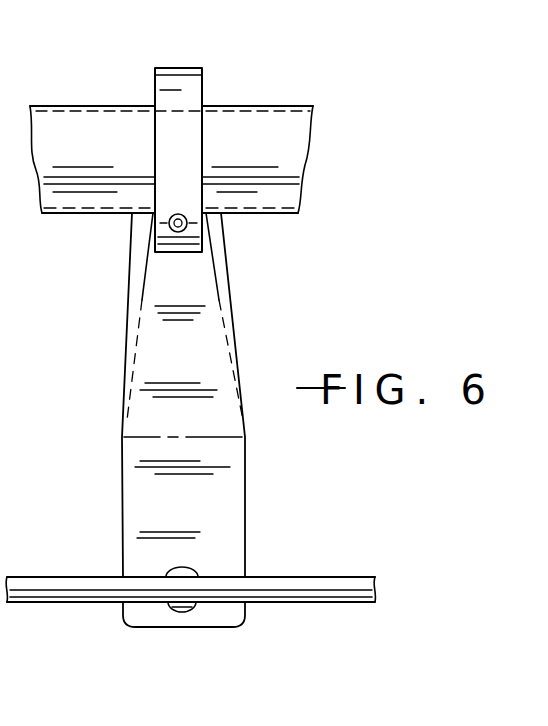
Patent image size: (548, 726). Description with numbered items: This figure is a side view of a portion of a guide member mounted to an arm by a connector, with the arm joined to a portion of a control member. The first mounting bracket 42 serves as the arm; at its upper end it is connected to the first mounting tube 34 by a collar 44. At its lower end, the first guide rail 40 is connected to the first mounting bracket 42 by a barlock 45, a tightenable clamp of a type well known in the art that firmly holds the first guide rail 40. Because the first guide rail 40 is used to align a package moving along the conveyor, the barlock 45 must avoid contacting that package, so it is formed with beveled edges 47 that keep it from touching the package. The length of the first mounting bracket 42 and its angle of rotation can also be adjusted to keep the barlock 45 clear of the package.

The first mounting tube 34 is at (95, 127).
The collar 44 is at (190, 88).
The first mounting bracket 42 is at (152, 290).
The first guide rail 40 is at (328, 584).
The beveled edges 47 is at (176, 575).
The barlock 45 is at (193, 610).